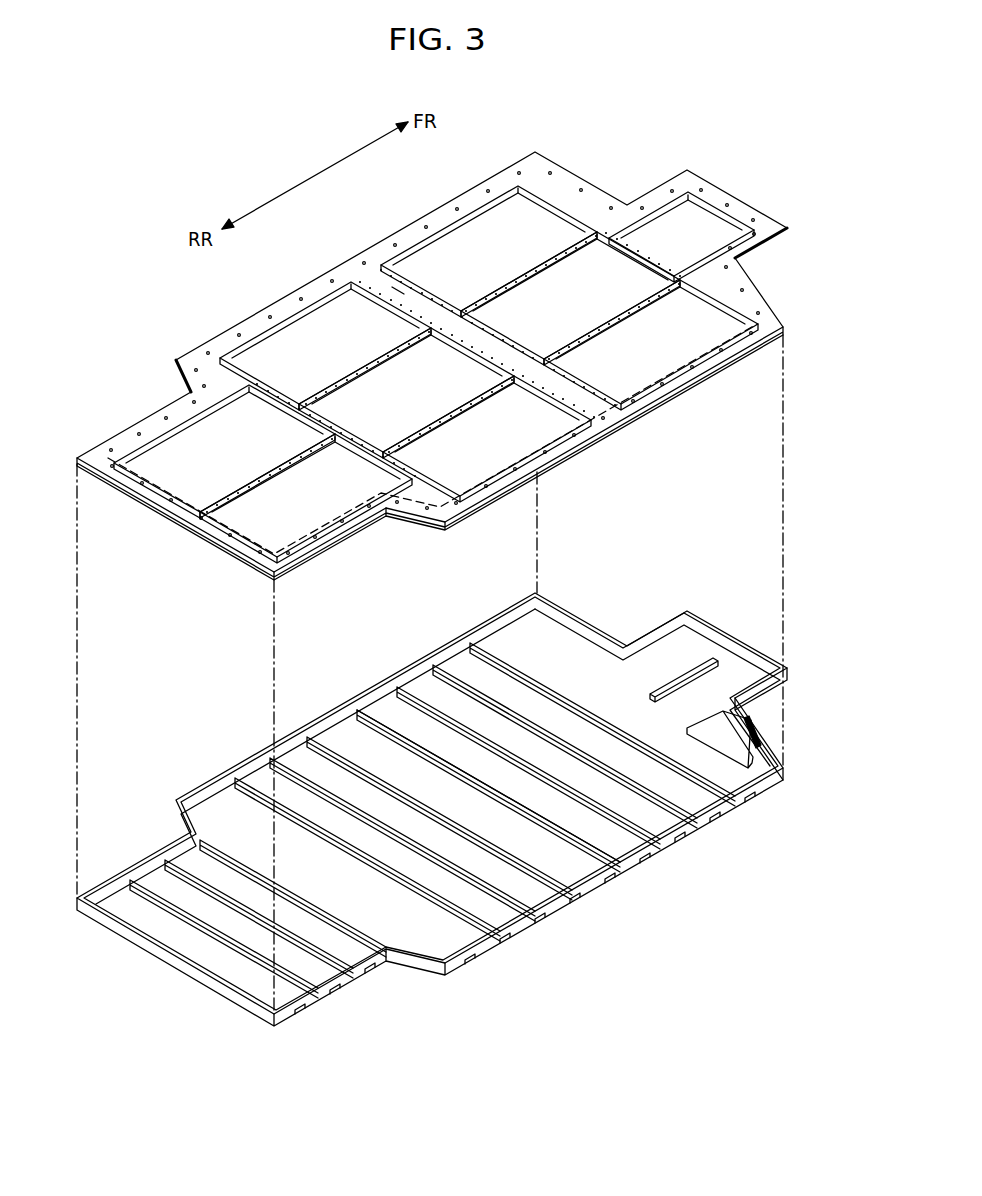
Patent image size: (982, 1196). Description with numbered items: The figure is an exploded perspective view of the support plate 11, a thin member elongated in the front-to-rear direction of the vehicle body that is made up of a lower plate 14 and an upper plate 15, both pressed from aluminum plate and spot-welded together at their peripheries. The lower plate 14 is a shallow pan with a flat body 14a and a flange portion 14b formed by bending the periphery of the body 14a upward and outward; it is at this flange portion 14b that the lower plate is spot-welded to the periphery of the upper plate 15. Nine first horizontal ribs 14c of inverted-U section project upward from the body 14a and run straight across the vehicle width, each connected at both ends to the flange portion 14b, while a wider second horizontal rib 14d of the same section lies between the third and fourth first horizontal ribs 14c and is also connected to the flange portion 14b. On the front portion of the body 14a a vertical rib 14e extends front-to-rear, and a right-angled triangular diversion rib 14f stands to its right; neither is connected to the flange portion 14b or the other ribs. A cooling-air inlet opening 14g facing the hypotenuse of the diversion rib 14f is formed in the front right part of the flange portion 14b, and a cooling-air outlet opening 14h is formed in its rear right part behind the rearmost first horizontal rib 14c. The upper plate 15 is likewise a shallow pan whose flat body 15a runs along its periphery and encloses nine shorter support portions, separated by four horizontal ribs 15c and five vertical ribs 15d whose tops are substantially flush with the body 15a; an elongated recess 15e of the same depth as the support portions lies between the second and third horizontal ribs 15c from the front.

The support plate 11 is at (719, 465).
The lower plate 14 is at (647, 624).
The body 14a is at (612, 840).
The flange portion 14b is at (413, 662).
The first horizontal ribs 14c is at (570, 705).
The second horizontal rib 14d is at (432, 760).
The vertical rib 14e is at (663, 685).
The diversion rib 14f is at (710, 717).
The cooling-air inlet opening 14g is at (757, 748).
The cooling-air outlet opening 14h is at (300, 1010).
The upper plate 15 is at (628, 428).
The body 15a is at (560, 183).
The horizontal ribs 15c is at (620, 240).
The vertical ribs 15d is at (507, 278).
The elongated recess 15e is at (398, 292).